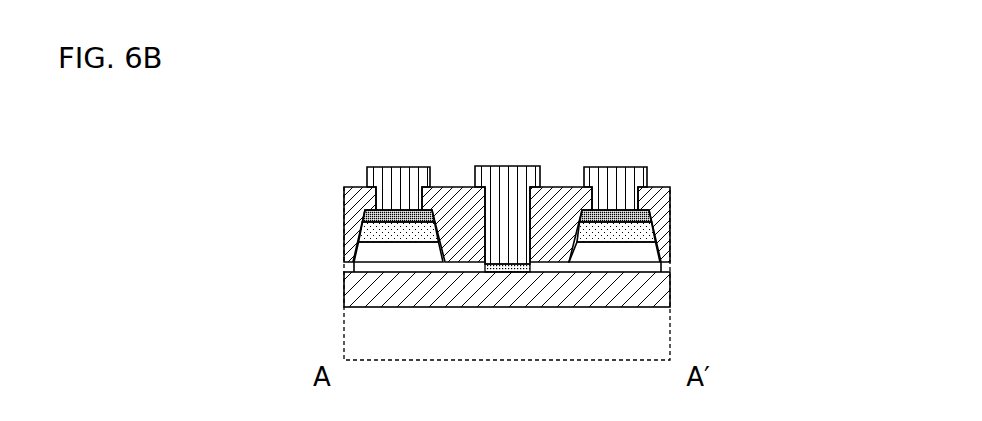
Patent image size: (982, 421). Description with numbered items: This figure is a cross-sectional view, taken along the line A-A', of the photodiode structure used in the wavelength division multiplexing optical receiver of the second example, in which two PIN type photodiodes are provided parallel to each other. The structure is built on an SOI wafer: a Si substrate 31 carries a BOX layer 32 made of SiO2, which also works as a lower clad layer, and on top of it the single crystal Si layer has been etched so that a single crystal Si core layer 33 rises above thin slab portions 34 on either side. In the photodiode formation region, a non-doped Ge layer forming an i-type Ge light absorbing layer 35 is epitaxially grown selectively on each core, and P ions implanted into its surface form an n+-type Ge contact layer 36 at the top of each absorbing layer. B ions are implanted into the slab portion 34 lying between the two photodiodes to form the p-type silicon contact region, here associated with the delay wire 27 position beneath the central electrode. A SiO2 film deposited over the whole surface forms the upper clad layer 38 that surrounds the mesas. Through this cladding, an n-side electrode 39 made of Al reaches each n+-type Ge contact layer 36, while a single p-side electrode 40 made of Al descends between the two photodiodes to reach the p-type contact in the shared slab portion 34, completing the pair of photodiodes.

The delay wire 27 is at (512, 272).
The Si substrate 31 is at (667, 337).
The BOX layer 32 is at (666, 290).
The single crystal Si core layer 33 is at (372, 252).
The slab portions 34 is at (352, 270).
The i-type Ge light absorbing layer 35 is at (377, 213).
The n+-type Ge contact layer 36 is at (348, 193).
The upper clad layer 38 is at (563, 188).
The n-side electrode 39 is at (402, 178).
The p-side electrode 40 is at (507, 178).